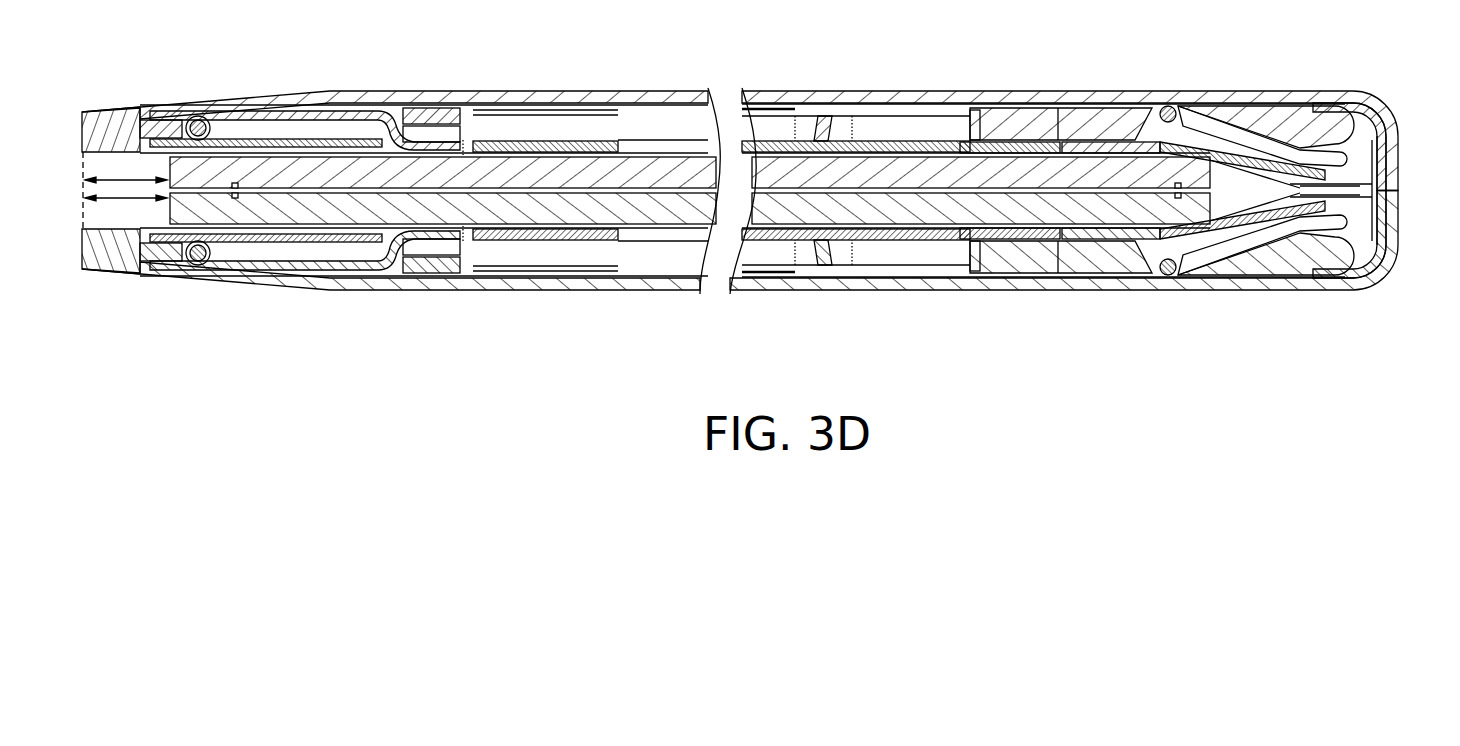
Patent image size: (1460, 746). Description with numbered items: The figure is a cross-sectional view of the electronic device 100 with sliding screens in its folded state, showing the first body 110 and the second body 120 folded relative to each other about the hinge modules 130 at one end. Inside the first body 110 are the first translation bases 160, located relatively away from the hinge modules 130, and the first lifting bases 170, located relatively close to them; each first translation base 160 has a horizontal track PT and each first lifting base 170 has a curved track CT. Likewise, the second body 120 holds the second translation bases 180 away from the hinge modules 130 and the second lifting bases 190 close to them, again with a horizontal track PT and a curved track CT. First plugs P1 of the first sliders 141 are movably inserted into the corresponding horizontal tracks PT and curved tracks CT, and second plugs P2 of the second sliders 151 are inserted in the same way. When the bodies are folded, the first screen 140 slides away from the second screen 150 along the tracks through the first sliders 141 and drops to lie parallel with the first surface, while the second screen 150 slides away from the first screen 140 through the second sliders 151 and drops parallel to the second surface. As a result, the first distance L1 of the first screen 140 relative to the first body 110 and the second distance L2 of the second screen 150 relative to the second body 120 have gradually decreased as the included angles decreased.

The electronic device with sliding screens 100 is at (1371, 392).
The first body 110 is at (1044, 284).
The second body 120 is at (1044, 100).
The hinge module 130 is at (1386, 190).
The first screen 140 is at (898, 210).
The second screen 150 is at (898, 172).
The first slider 141 is at (415, 248).
The second slider 151 is at (415, 133).
The first translation base 160 is at (408, 263).
The first lifting base 170 is at (1298, 260).
The second translation base 180 is at (408, 118).
The second lifting base 190 is at (1298, 122).
The horizontal track PT is at (303, 126).
The curved track CT is at (1212, 128).
The first plug P1 is at (207, 262).
The second plug P2 is at (207, 120).
The first distance L1 is at (128, 200).
The second distance L2 is at (128, 178).